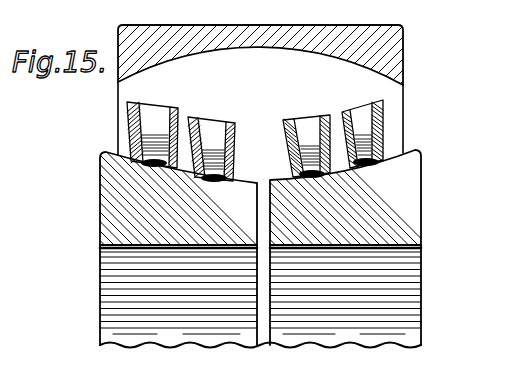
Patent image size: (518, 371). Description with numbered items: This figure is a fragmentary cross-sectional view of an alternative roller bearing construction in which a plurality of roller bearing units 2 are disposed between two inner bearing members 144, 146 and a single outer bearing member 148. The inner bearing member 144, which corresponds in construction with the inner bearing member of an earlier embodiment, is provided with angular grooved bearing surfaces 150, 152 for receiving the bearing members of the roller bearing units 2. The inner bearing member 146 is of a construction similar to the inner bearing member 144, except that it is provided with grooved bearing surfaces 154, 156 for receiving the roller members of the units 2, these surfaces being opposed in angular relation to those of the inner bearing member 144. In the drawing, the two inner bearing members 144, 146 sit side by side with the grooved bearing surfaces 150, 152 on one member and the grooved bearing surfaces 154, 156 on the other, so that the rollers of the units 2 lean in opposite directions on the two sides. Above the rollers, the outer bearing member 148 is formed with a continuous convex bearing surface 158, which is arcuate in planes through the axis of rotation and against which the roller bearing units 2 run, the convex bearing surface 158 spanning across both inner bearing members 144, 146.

The roller bearing units 2 is at (157, 127).
The inner bearing member 144 is at (122, 230).
The inner bearing member 146 is at (400, 237).
The outer bearing member 148 is at (386, 62).
The angular grooved bearing surface 150 is at (150, 165).
The angular grooved bearing surface 152 is at (212, 180).
The grooved bearing surface 154 is at (312, 182).
The grooved bearing surface 156 is at (370, 165).
The continuous convex bearing surface 158 is at (220, 113).